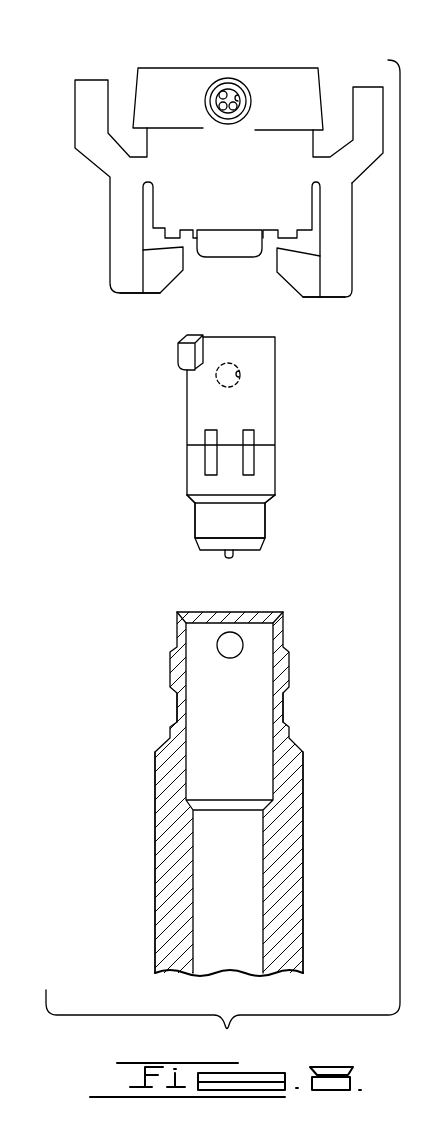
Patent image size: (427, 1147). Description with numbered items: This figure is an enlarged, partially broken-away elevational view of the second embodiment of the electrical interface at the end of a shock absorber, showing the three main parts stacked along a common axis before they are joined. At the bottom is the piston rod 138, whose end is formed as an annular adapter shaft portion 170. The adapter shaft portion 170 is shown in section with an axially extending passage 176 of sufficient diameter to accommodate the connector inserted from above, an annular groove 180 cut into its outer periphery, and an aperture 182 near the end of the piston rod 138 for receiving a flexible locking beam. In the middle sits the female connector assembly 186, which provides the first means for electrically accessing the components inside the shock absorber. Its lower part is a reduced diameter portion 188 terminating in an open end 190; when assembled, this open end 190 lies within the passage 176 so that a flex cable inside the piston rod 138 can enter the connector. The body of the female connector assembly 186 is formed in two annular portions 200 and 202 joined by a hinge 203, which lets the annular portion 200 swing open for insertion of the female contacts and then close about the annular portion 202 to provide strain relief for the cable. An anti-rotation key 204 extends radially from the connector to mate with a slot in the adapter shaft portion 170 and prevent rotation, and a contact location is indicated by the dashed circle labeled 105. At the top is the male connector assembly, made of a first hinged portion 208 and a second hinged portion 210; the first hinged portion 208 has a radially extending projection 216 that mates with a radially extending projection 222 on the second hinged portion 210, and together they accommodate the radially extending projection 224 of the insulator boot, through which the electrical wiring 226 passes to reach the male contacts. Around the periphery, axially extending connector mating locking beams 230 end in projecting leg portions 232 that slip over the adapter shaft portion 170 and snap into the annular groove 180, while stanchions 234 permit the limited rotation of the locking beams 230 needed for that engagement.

The contact 105 is at (242, 376).
The piston rod 138 is at (160, 903).
The annular adapter shaft portion 170 is at (290, 665).
The axially extending passage 176 is at (222, 770).
The annular groove 180 is at (283, 707).
The aperture 182 is at (232, 638).
The female connector assembly 186 is at (268, 351).
The reduced diameter portion 188 is at (260, 530).
The open end 190 is at (247, 556).
The annular portion 200 is at (263, 413).
The annular portion 202 is at (262, 498).
The hinge 203 is at (247, 463).
The anti-rotation key 204 is at (179, 353).
The first hinged portion 208 is at (310, 155).
The second hinged portion 210 is at (310, 82).
The radially extending projection 216 is at (227, 124).
The radially extending projection 222 is at (230, 80).
The radially extending projection of insulator boot 224 is at (211, 93).
The electrical wiring 226 is at (238, 100).
The connector mating locking beams 230 is at (87, 97).
The projecting leg portions 232 is at (123, 217).
The stanchions 234 is at (143, 165).